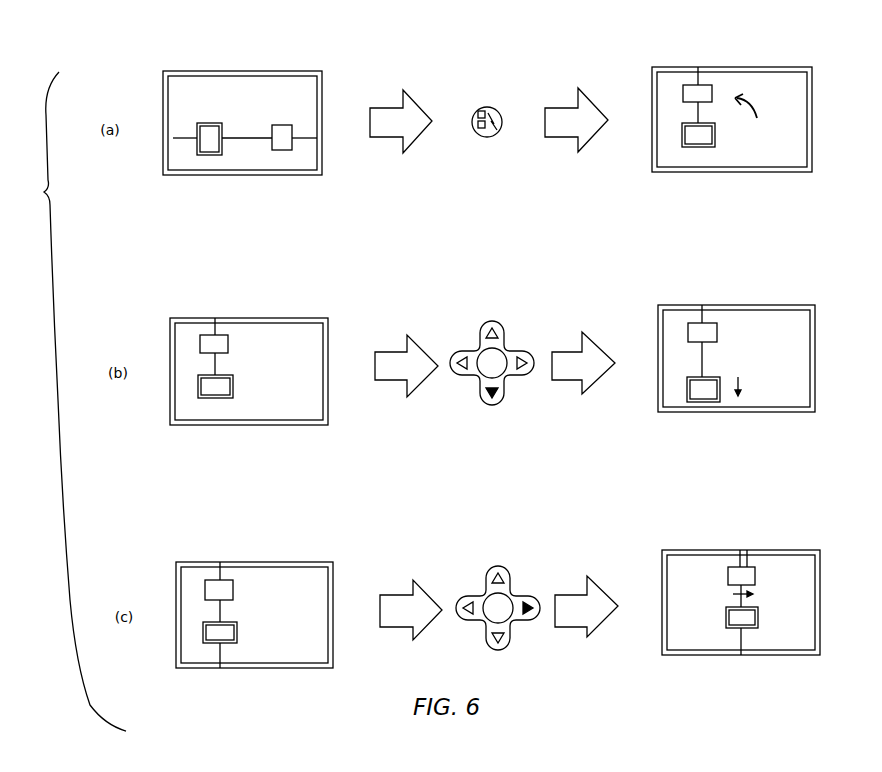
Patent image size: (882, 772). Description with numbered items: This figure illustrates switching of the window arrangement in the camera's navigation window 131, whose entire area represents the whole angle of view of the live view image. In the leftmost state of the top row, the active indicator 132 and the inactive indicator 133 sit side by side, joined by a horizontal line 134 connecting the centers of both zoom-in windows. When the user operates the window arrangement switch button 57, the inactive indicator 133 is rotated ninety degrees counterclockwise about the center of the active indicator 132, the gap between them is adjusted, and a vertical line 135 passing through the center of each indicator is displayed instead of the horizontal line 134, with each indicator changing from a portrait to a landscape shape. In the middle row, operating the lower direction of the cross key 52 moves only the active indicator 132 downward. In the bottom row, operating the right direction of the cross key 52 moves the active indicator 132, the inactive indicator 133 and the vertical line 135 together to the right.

The cross key 52 is at (503, 332).
The window arrangement switch button 57 is at (500, 132).
The navigation window 131 is at (322, 146).
The active indicator 132 is at (212, 155).
The inactive indicator 133 is at (283, 150).
The horizontal line 134 is at (183, 143).
The vertical line 135 is at (698, 152).